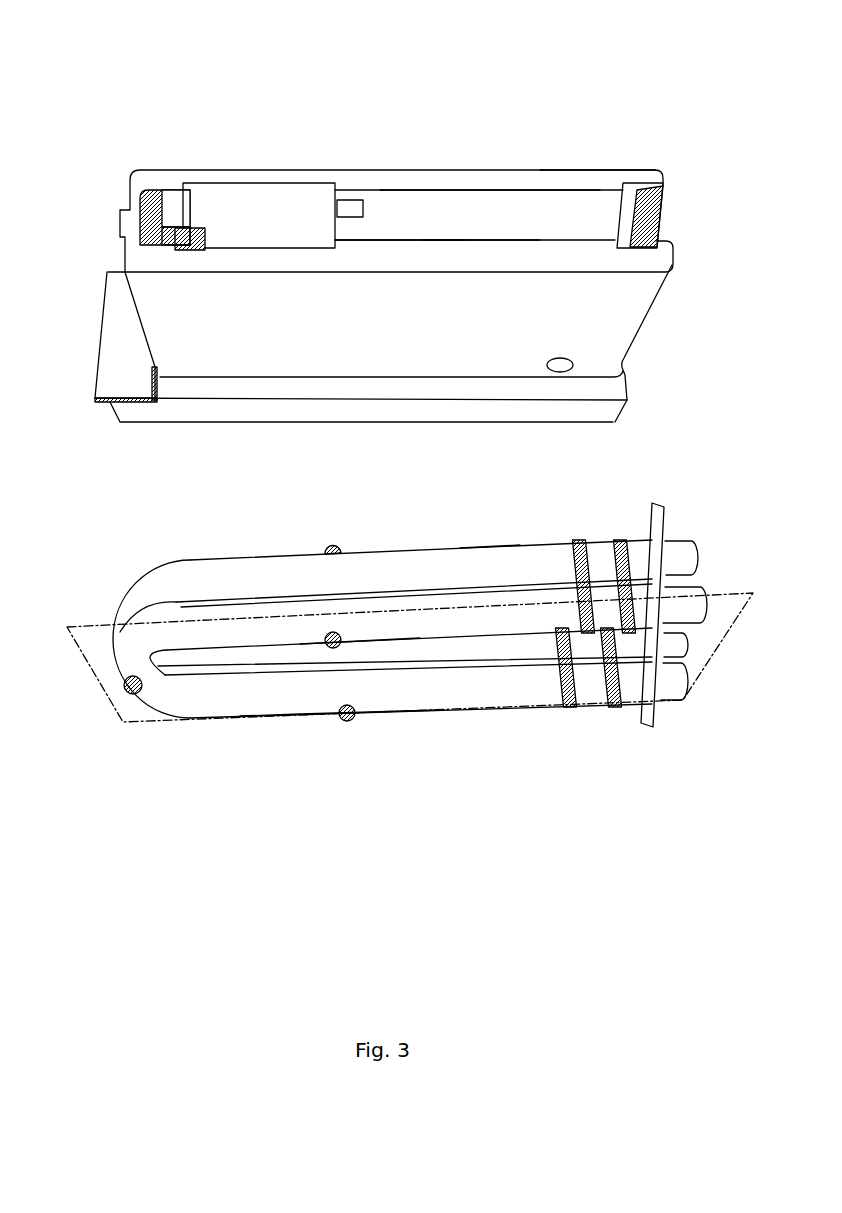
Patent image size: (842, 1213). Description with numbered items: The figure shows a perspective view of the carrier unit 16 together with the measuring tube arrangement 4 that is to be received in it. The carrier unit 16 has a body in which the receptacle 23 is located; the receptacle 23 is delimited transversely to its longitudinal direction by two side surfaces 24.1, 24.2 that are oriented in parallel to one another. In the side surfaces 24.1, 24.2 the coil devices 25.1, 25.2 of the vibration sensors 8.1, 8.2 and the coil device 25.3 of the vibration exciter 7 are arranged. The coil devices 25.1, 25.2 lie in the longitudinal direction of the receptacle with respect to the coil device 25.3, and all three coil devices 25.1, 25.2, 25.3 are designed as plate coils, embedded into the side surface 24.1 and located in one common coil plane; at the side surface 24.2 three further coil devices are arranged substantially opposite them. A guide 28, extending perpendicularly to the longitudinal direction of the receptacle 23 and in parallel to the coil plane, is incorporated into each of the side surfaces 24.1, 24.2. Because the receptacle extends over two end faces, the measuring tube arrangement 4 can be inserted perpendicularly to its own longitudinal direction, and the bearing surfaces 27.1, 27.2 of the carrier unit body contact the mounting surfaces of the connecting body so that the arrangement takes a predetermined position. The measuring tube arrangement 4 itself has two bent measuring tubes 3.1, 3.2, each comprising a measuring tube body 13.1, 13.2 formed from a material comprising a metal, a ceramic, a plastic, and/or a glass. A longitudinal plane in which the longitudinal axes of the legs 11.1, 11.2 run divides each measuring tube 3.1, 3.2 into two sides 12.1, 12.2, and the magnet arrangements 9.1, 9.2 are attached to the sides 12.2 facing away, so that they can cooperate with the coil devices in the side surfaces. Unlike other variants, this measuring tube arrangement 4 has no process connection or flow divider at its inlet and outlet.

The measuring tube 3.1 is at (382, 590).
The measuring tube 3.2 is at (483, 653).
The measuring tube arrangement 4 is at (160, 762).
The vibration exciter 7 is at (182, 228).
The vibration sensor 8.1 is at (259, 184).
The vibration sensor 8.2 is at (330, 200).
The magnet arrangement 9.1 is at (348, 542).
The magnet arrangement 9.2 is at (313, 735).
The leg 11.1 is at (427, 630).
The leg 11.2 is at (390, 698).
The side 12.1 is at (275, 605).
The side 12.2 is at (387, 628).
The measuring tube body 13.1 is at (500, 581).
The measuring tube body 13.2 is at (280, 710).
The carrier unit 16 is at (550, 203).
The receptacle 23 is at (162, 202).
The side surface 24.1 is at (428, 215).
The side surface 24.2 is at (462, 243).
The coil device 25.1 is at (371, 142).
The coil device 25.2 is at (347, 203).
The coil device 25.3 is at (177, 243).
The bearing surface 27.1 is at (523, 207).
The bearing surface 27.2 is at (387, 243).
The guide 28 is at (630, 203).